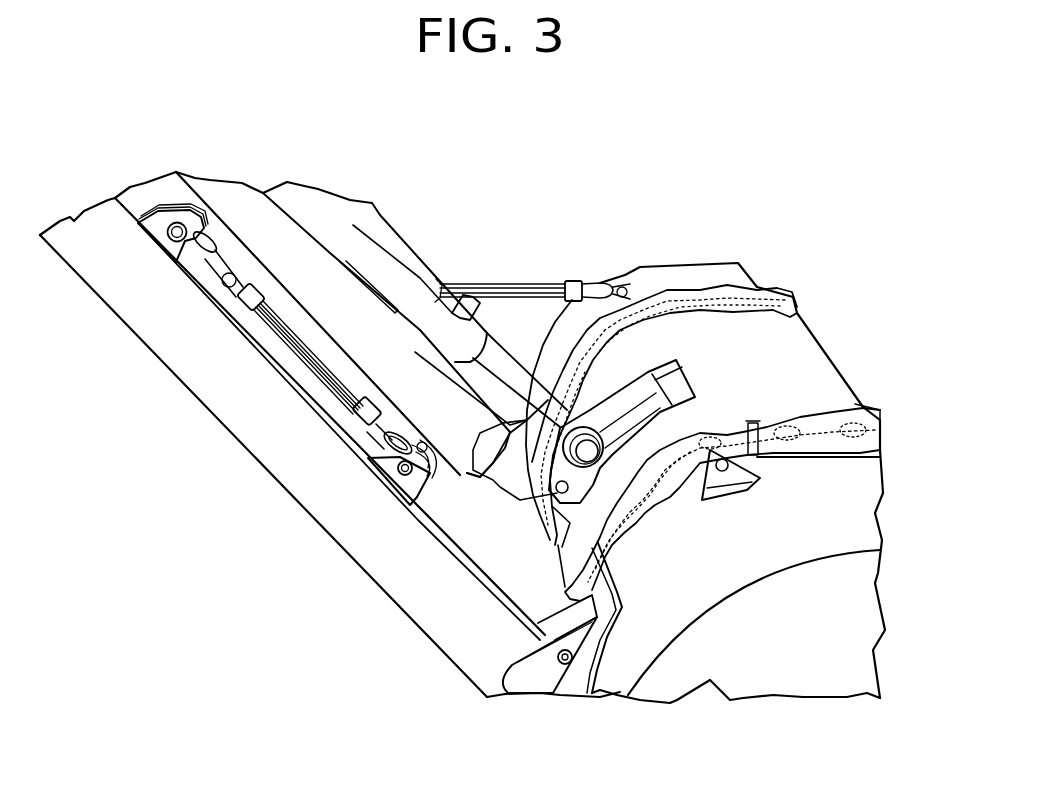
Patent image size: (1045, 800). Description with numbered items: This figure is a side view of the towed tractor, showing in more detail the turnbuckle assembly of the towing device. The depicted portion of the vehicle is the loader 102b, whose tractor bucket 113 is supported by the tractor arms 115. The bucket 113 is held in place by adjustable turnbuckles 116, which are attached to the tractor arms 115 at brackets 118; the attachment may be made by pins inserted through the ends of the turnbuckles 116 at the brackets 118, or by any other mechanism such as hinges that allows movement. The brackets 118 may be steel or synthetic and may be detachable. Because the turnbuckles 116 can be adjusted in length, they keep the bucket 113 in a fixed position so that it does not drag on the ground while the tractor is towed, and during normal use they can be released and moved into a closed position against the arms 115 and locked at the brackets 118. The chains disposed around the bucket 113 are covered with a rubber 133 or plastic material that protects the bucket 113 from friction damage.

The loader 102b is at (850, 368).
The tractor bucket 113 is at (750, 280).
The tractor arms 115 is at (235, 437).
The turnbuckles 116 is at (593, 287).
The brackets 118 is at (160, 212).
The rubber 133 is at (882, 422).